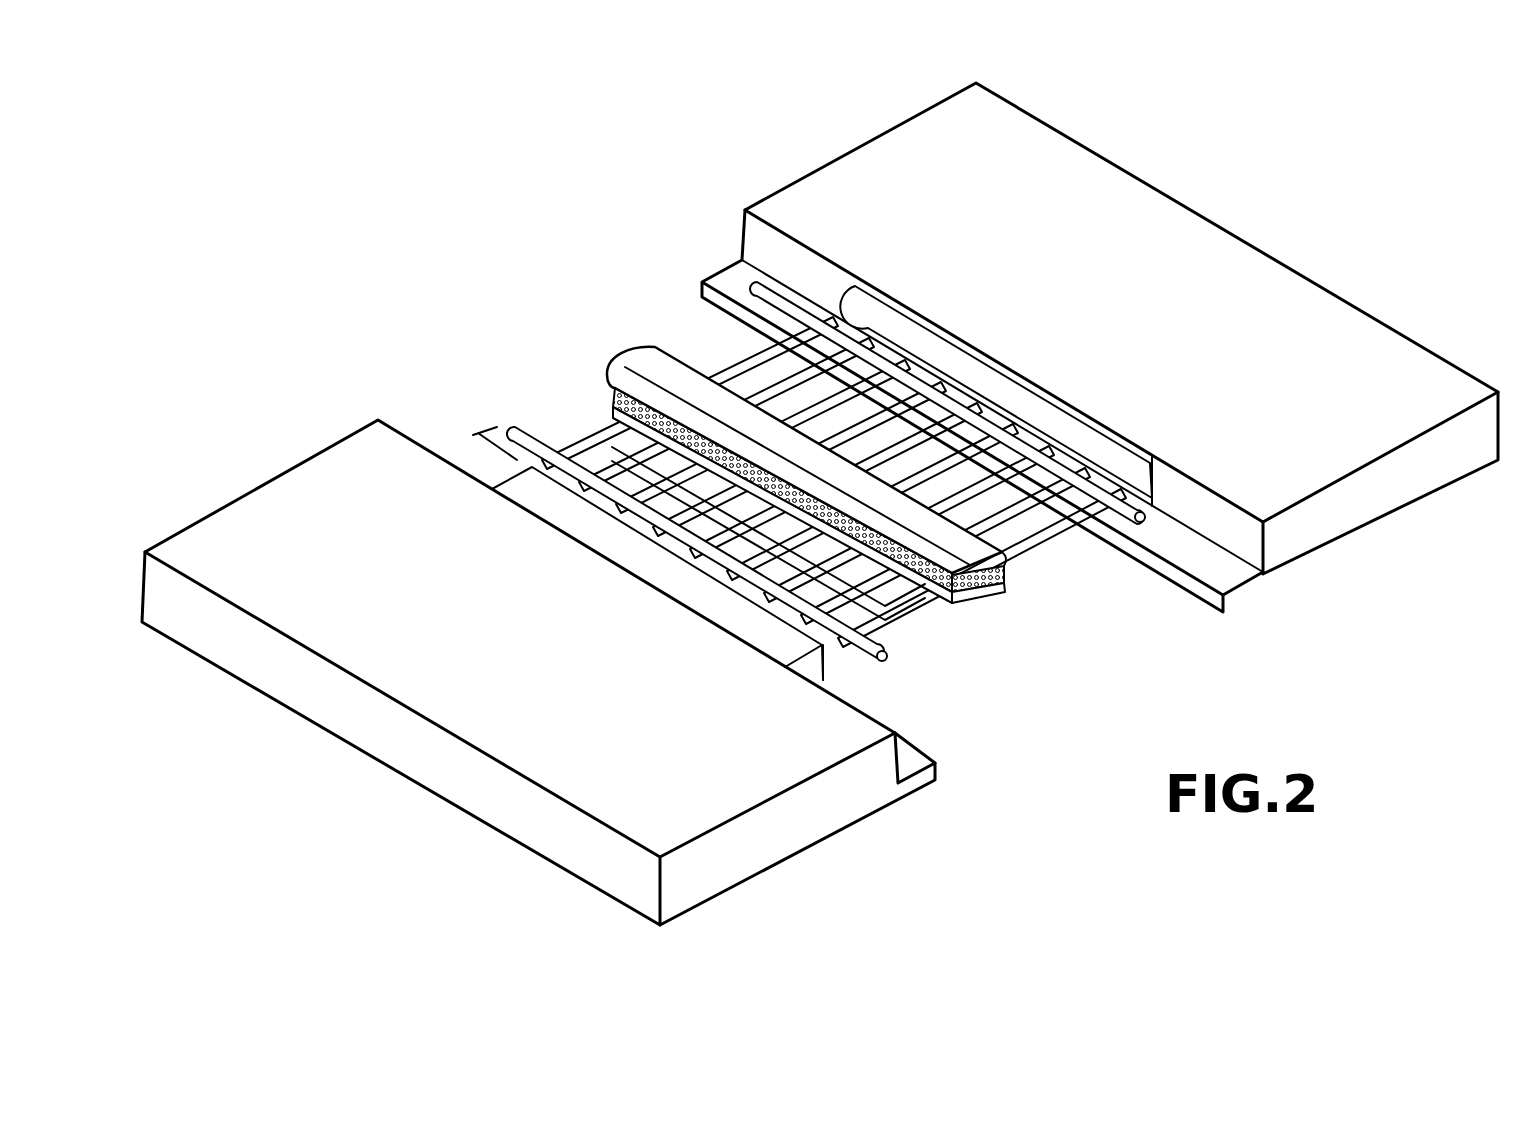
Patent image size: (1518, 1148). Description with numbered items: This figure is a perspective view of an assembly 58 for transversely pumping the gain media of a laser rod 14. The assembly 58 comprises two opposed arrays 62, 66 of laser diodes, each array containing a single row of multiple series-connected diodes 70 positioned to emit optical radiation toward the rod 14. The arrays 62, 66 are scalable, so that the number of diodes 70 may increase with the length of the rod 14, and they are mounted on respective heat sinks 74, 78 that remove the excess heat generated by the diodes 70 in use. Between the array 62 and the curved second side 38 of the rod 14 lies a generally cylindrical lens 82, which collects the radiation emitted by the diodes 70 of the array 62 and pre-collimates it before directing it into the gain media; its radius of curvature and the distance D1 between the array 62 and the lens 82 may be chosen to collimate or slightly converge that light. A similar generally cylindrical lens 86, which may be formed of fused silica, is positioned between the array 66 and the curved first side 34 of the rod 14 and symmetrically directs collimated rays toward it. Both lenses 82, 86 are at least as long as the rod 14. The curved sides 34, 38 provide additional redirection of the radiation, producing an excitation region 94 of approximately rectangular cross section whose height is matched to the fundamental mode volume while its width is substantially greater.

The rod 14 is at (843, 472).
The first side 34 is at (956, 600).
The second side 38 is at (1005, 552).
The assembly 58 is at (820, 504).
The array 62 is at (1158, 490).
The array 66 is at (826, 678).
The diodes 70 is at (862, 300).
The heat sink 74 is at (1194, 370).
The heat sink 78 is at (654, 760).
The lens 82 is at (1140, 522).
The lens 86 is at (888, 661).
The excitation region 94 is at (985, 600).
The distance D1 is at (470, 425).